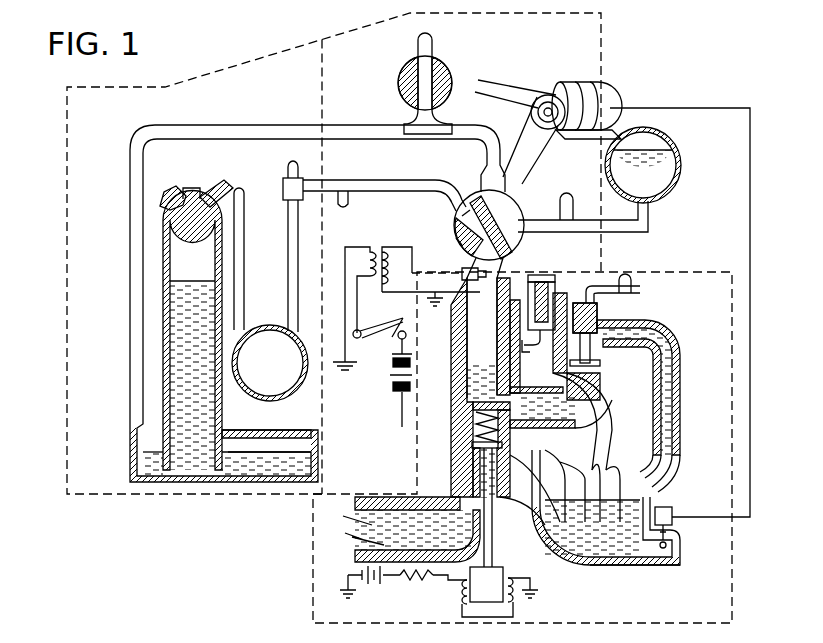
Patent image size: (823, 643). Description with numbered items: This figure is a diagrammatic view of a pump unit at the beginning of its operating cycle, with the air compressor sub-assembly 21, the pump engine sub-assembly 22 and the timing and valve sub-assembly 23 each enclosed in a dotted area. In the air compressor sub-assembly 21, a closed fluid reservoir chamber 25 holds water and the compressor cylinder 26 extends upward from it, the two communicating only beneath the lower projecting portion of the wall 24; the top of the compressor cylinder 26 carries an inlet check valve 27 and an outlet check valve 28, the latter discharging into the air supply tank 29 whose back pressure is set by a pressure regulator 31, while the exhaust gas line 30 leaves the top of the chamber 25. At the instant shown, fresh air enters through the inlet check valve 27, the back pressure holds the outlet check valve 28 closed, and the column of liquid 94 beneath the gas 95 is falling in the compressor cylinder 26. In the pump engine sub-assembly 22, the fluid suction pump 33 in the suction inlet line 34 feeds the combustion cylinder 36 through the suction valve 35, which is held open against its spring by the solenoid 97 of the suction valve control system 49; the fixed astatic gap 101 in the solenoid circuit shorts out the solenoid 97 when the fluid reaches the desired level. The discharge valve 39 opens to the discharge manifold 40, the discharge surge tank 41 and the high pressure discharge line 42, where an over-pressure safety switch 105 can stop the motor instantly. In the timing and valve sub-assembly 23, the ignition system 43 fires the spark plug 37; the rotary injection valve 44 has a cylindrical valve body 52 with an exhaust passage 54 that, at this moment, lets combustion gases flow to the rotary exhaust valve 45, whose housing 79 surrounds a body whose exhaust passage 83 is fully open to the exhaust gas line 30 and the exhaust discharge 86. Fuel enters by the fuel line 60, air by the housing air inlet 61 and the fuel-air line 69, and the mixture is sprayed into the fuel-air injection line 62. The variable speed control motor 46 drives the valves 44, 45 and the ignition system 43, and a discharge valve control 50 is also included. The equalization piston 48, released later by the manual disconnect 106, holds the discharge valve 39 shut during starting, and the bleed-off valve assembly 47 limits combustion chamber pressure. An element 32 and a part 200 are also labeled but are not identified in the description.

The air compressor sub-assembly 21 is at (60, 221).
The pump engine sub-assembly 22 is at (742, 569).
The timing and valve sub-assembly 23 is at (609, 76).
The wall of cylinder chamber 24 is at (165, 482).
The fluid reservoir chamber 25 is at (130, 469).
The compressor cylinder 26 is at (226, 398).
The inlet check valve 27 is at (173, 182).
The outlet check valve 28 is at (212, 190).
The air supply tank 29 is at (270, 363).
The exhaust gas line 30 is at (130, 203).
The pressure regulator 31 is at (283, 190).
The tank 32 is at (661, 150).
The fluid suction pump 33 is at (355, 526).
The fluid suction inlet line 34 is at (548, 518).
The suction valve 35 is at (521, 447).
The combustion cylinder 36 is at (523, 330).
The spark plug 37 is at (453, 270).
The discharge valve 39 is at (592, 396).
The discharge manifold 40 is at (681, 405).
The discharge surge tank 41 is at (596, 548).
The discharge line 42 is at (658, 571).
The ignition system 43 is at (387, 405).
The rotary injection valve 44 is at (524, 199).
The rotary exhaust valve 45 is at (391, 81).
The variable speed control motor 46 is at (577, 80).
The bleed-off valve assembly 47 is at (553, 291).
The equalization piston 48 is at (600, 311).
The suction valve control system 49 is at (451, 603).
The discharge valve control 50 is at (641, 286).
The cylindrical valve body 52 is at (457, 238).
The exhaust passage 54 is at (463, 216).
The fuel line 60 is at (545, 226).
The housing air inlet 61 is at (447, 183).
The fuel-air injection line 62 is at (543, 282).
The fuel-air line 69 is at (350, 206).
The exhaust valve housing 79 is at (446, 126).
The exhaust passage 83 is at (436, 84).
The exhaust discharge 86 is at (432, 46).
The fluid column 94 is at (192, 331).
The gas 95 is at (175, 280).
The solenoid 97 is at (505, 601).
The fixed astatic gap 101 is at (492, 296).
The over-pressure safety switch 105 is at (668, 508).
The manual disconnect 106 is at (625, 272).
The intake pipe 200 is at (378, 540).